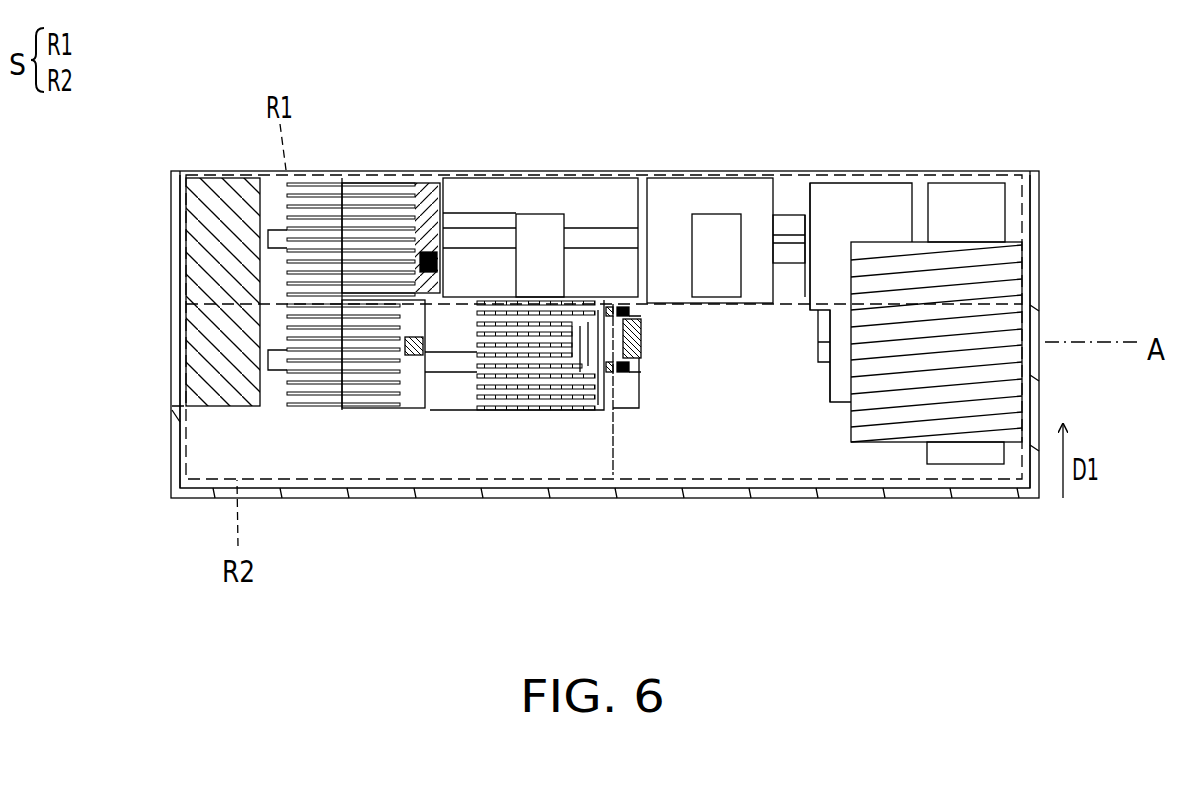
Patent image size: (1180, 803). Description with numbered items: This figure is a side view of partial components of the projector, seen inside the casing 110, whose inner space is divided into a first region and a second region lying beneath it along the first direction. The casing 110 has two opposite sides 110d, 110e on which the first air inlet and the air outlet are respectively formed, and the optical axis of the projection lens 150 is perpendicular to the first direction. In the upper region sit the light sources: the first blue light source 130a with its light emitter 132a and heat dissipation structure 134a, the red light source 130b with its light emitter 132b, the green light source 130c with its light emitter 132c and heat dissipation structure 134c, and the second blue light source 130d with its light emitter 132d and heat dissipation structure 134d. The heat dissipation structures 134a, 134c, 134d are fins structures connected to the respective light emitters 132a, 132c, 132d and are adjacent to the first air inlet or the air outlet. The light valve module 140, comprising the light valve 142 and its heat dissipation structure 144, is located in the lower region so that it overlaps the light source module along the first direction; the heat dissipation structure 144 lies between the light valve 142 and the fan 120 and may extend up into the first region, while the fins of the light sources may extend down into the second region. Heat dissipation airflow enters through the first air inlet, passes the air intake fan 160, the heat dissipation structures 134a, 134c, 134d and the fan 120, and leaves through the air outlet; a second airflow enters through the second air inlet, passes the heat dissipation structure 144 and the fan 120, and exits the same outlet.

The casing 110 is at (310, 488).
The side of casing 110d is at (1043, 205).
The side of casing 110e is at (180, 374).
The fan 120 is at (215, 235).
The second blue light source 130d is at (460, 85).
The heat dissipation structure 134d is at (324, 186).
The light emitter 132d is at (450, 190).
The green light source 130c is at (627, 85).
The light emitter 132c is at (538, 224).
The heat dissipation structure 134c is at (600, 195).
The red light source 130b is at (726, 201).
The light emitter 132b is at (712, 230).
The air intake fan 160 is at (966, 196).
The projection lens 150 is at (1015, 273).
The light valve module 140 is at (700, 572).
The heat dissipation structure 144 is at (567, 392).
The light valve 142 is at (641, 343).
The first blue light source 130a is at (857, 572).
The light emitter 132a is at (806, 289).
The heat dissipation structure 134a is at (832, 291).